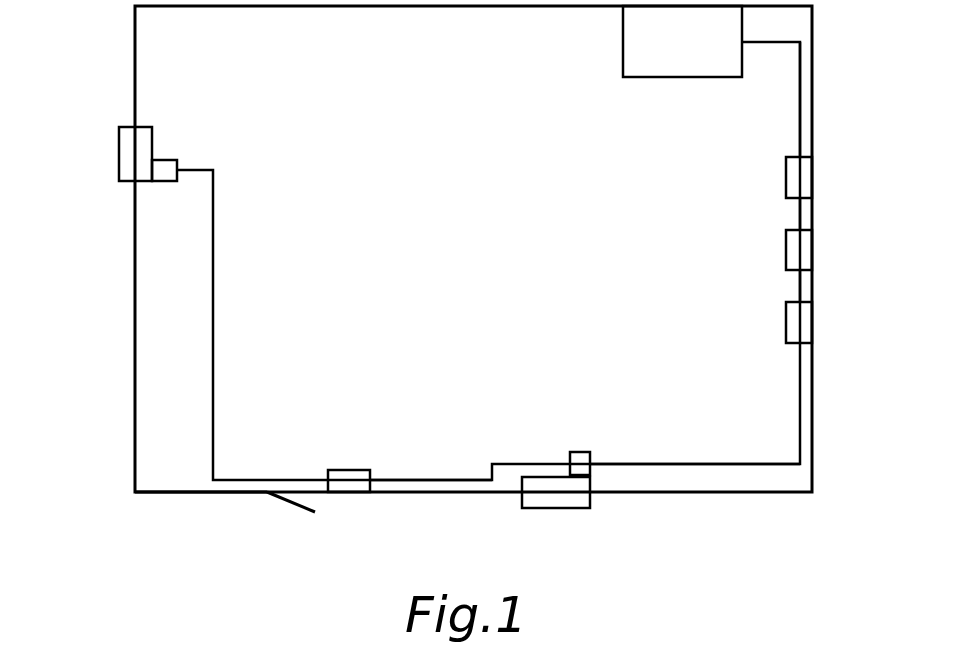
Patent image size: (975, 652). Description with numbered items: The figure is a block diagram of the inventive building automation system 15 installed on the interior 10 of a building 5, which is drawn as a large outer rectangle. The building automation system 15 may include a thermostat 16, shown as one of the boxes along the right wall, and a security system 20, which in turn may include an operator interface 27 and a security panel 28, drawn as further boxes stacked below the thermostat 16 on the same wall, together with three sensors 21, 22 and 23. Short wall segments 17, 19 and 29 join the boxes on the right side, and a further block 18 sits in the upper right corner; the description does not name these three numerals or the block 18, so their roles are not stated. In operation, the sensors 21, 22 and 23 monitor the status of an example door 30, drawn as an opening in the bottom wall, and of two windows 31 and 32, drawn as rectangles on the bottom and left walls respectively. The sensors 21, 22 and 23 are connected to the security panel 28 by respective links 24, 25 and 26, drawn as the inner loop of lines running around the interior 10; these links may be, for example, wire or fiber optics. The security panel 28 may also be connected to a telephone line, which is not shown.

The building 5 is at (122, 27).
The interior 10 is at (410, 175).
The building automation system 15 is at (715, 195).
The thermostat 16 is at (812, 180).
The supply duct 17 is at (800, 122).
The air handling unit 18 is at (623, 48).
The duct section 19 is at (800, 216).
The security system 20 is at (715, 283).
The sensor 21 is at (580, 451).
The sensor 22 is at (350, 504).
The sensor 23 is at (164, 187).
The link 24 is at (726, 462).
The link 25 is at (431, 478).
The link 26 is at (213, 303).
The operator interface 27 is at (812, 252).
The security panel 28 is at (812, 324).
The duct section 29 is at (800, 289).
The door 30 is at (286, 505).
The window 31 is at (552, 510).
The window 32 is at (119, 147).